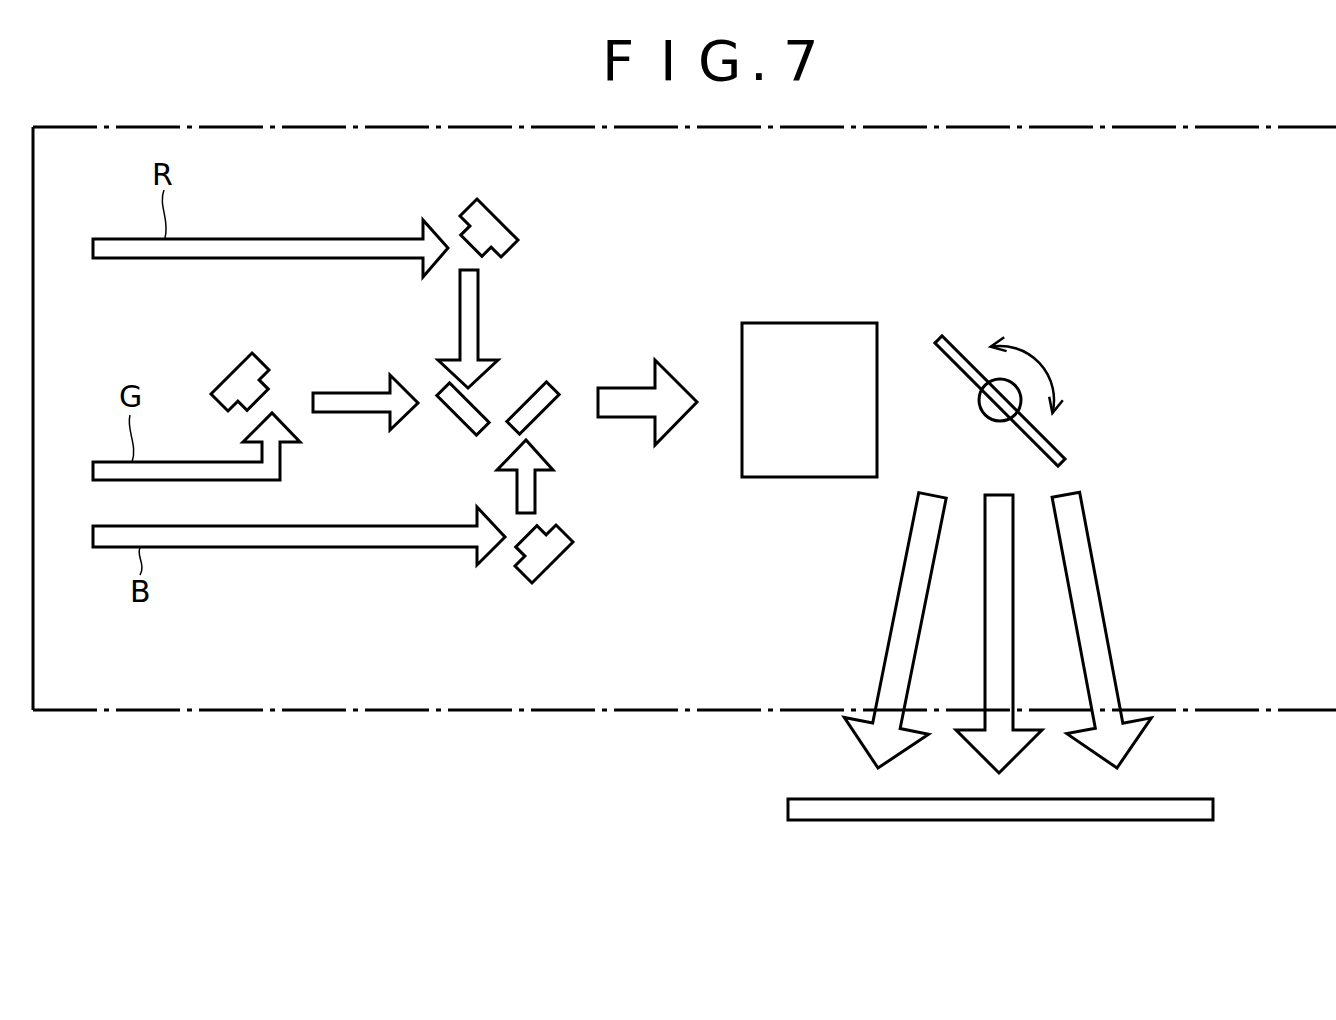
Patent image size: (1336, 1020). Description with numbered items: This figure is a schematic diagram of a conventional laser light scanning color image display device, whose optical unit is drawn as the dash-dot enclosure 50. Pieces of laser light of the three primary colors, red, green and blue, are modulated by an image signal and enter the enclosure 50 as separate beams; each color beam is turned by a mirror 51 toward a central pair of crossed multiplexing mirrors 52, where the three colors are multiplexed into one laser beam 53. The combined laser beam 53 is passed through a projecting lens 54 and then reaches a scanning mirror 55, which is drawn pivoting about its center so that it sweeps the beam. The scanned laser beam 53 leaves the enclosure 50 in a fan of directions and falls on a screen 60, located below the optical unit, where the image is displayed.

The illumination optical system 50 is at (397, 712).
The mirror 51 is at (500, 210).
The dichroic mirror 52 is at (530, 395).
The light beam 53 is at (628, 386).
The light modulator 54 is at (812, 322).
The scanning mirror 55 is at (1048, 435).
The screen 60 is at (788, 810).